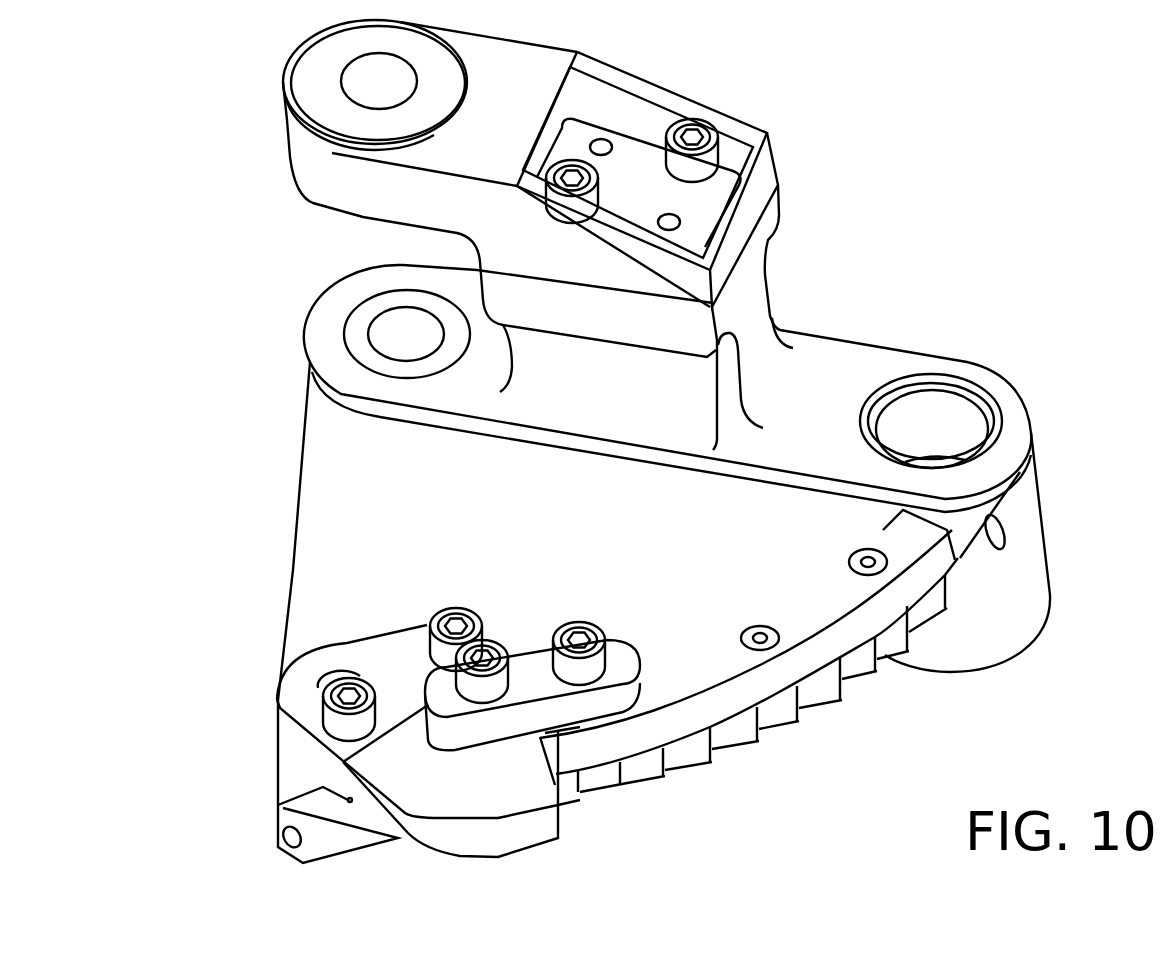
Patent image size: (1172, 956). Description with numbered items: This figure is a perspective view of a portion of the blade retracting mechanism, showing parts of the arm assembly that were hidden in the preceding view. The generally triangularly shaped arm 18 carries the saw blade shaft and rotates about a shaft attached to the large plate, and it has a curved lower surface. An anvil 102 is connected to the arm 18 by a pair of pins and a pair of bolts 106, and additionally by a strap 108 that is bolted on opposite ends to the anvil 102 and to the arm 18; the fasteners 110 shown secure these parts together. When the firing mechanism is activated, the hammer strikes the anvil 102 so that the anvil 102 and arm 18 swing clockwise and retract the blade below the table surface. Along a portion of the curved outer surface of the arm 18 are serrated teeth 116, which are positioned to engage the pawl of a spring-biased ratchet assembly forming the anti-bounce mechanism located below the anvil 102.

The arm 18 is at (373, 527).
The anvil 102 is at (498, 783).
The bolts 106 is at (333, 725).
The strap 108 is at (620, 656).
The fasteners 110 is at (550, 643).
The serrated teeth 116 is at (778, 717).